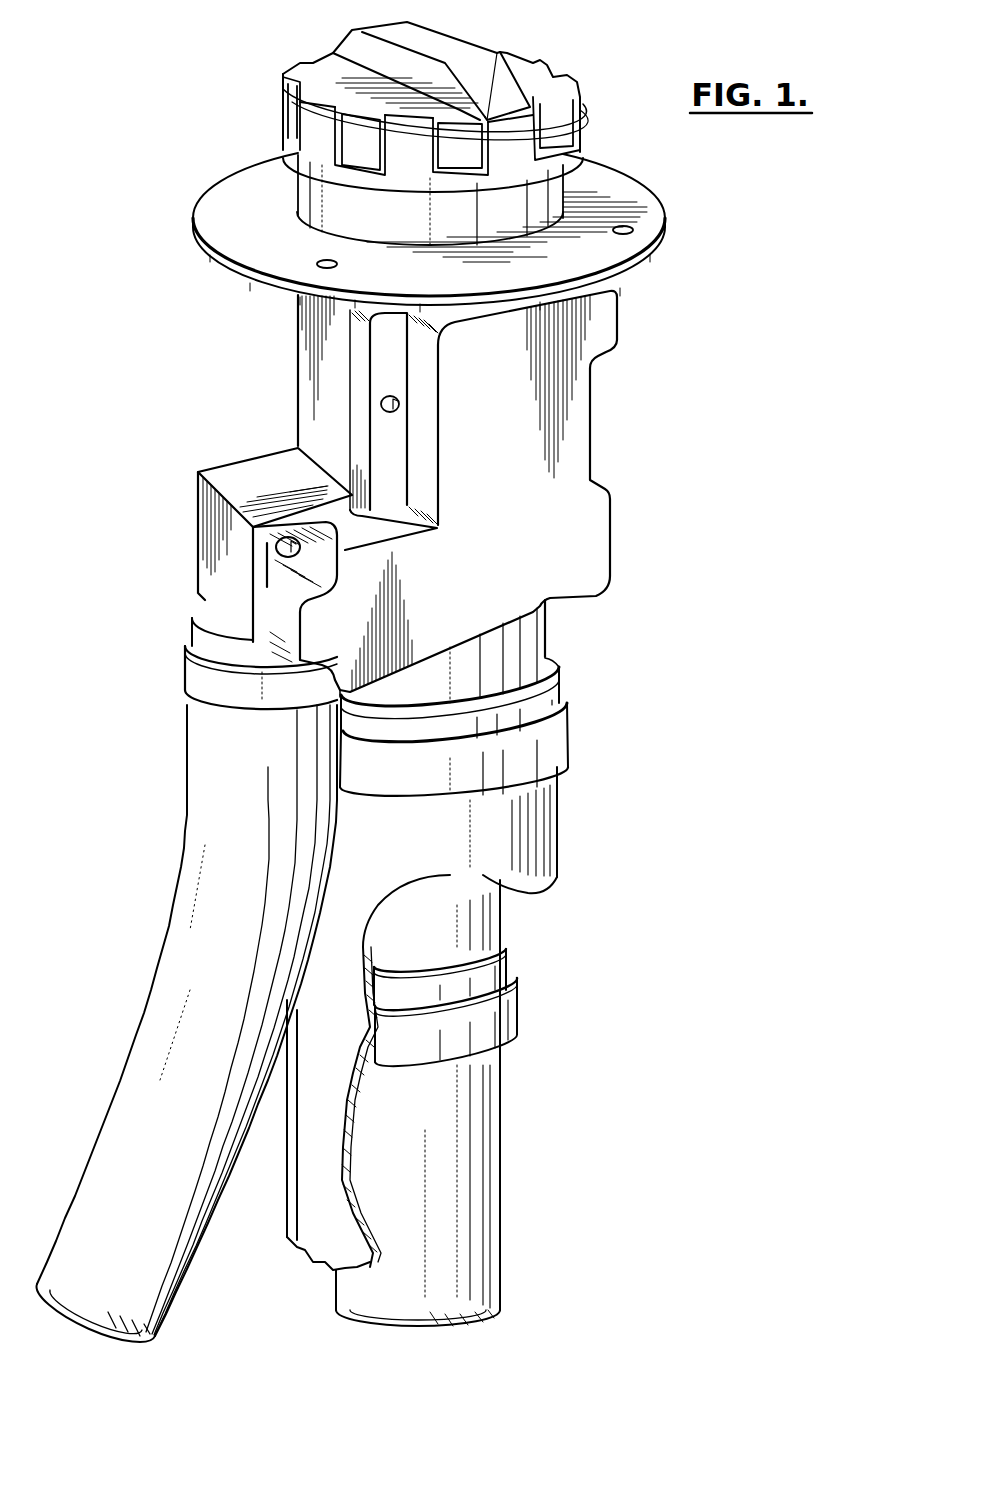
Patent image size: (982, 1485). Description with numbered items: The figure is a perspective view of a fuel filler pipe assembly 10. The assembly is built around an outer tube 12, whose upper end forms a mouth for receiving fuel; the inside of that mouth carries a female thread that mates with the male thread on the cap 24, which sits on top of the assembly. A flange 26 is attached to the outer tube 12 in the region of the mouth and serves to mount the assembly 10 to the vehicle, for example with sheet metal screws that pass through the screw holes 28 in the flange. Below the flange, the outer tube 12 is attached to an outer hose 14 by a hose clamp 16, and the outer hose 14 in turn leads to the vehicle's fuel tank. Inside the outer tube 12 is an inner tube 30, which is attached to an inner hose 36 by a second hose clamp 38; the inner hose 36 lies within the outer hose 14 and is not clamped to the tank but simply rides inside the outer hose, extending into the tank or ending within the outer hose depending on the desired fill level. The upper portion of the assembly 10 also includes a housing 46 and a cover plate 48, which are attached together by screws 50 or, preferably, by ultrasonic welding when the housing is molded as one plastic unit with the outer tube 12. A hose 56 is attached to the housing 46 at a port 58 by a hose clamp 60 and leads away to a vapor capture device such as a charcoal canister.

The fuel filler pipe assembly 10 is at (635, 679).
The outer tube 12 is at (525, 651).
The outer hose 14 is at (545, 835).
The hose clamp 16 is at (563, 742).
The cap 24 is at (522, 67).
The flange 26 is at (637, 192).
The screw holes 28 is at (313, 264).
The inner tube 30 is at (482, 919).
The inner hose 36 is at (493, 1160).
The hose clamp 38 is at (507, 1016).
The housing 46 is at (213, 498).
The cover plate 48 is at (575, 417).
The screws 50 is at (380, 405).
The hose 56 is at (203, 806).
The port 58 is at (215, 614).
The hose clamp 60 is at (183, 668).